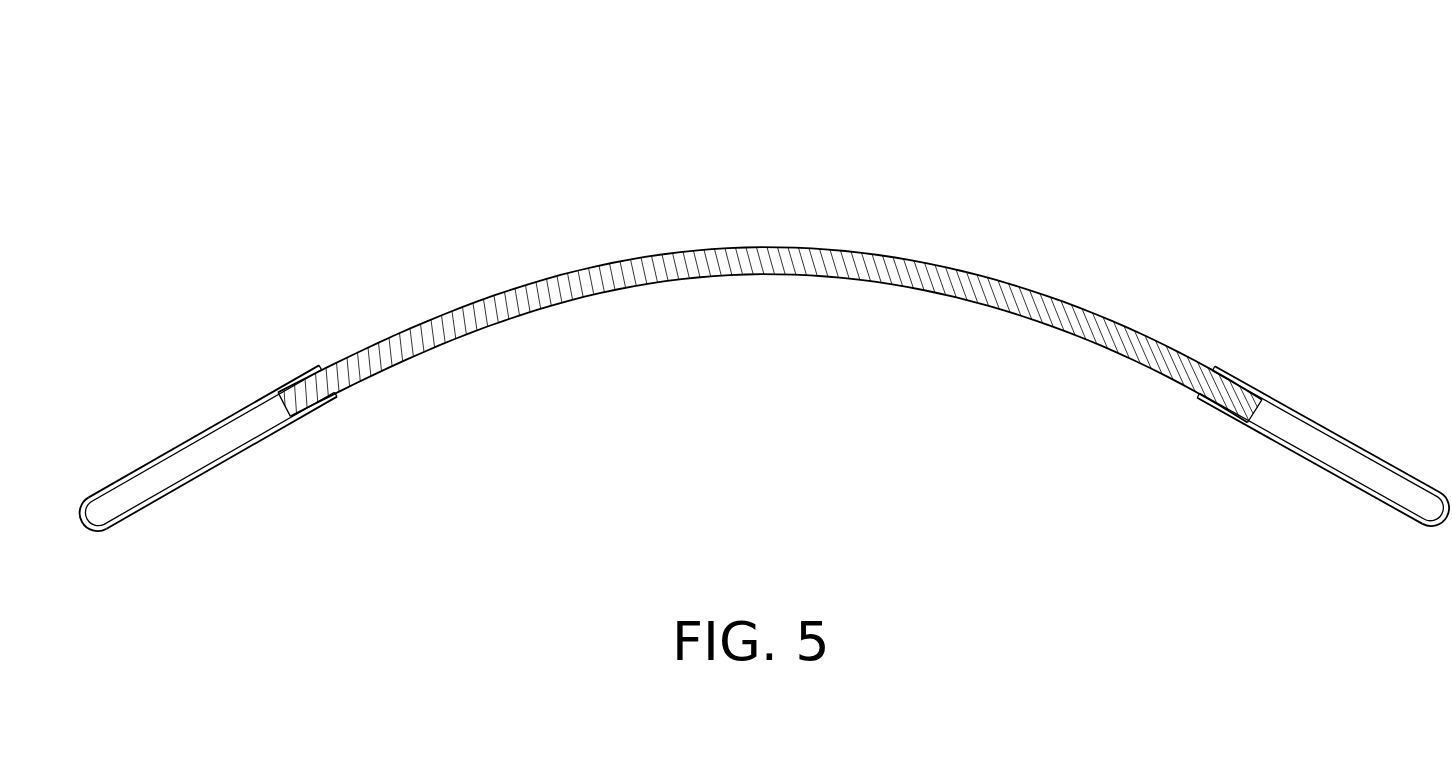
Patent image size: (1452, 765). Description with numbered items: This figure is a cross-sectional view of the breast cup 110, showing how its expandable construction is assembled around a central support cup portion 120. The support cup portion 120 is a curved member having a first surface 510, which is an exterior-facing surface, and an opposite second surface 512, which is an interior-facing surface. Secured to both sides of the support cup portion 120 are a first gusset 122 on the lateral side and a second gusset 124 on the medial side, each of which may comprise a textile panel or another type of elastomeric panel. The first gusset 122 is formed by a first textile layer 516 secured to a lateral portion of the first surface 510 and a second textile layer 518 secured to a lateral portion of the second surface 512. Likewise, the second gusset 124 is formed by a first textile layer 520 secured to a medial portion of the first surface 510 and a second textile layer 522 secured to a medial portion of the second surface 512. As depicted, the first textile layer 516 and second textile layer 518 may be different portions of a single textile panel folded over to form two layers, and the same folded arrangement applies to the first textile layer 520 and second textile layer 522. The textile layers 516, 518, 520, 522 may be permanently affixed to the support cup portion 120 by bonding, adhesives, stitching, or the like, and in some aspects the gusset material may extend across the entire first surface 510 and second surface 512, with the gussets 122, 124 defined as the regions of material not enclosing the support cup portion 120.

The breast cup 110 is at (216, 160).
The support cup portion 120 is at (448, 322).
The first gusset 122 is at (1393, 492).
The second gusset 124 is at (142, 490).
The first surface 510 is at (655, 243).
The second surface 512 is at (703, 291).
The first textile layer of the first gusset 516 is at (1347, 443).
The second textile layer of the first gusset 518 is at (1325, 473).
The first textile layer of the second gusset 520 is at (188, 443).
The second textile layer of the second gusset 522 is at (208, 472).